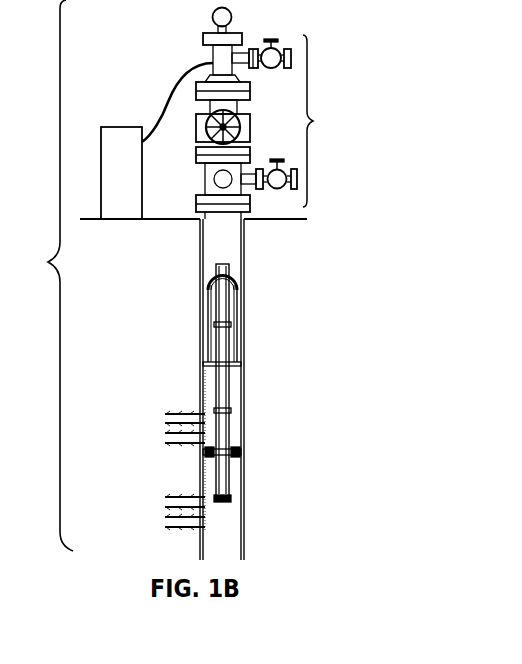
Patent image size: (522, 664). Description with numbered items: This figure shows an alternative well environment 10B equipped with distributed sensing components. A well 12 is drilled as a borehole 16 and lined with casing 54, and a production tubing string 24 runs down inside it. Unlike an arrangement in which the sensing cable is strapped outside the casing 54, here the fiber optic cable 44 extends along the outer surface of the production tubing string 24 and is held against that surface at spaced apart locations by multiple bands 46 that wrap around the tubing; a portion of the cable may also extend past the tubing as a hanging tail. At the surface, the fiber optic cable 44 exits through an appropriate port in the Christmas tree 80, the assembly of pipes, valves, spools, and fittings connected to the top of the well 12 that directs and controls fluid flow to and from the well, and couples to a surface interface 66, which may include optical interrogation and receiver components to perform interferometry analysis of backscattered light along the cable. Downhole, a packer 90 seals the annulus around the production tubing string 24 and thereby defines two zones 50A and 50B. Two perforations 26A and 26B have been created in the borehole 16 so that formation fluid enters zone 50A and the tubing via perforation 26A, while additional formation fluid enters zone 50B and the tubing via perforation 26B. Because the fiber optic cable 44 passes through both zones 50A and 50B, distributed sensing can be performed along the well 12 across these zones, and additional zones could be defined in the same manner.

The well environment 10B is at (40, 275).
The well 12 is at (181, 204).
The borehole 16 is at (199, 251).
The production tubing string 24 is at (230, 435).
The perforation 26A is at (163, 408).
The perforation 26B is at (163, 492).
The fiber optic cable 44 is at (183, 110).
The bands 46 is at (231, 326).
The zone 50A is at (207, 376).
The zone 50B is at (203, 470).
The casing 54 is at (243, 261).
The surface interface 66 is at (102, 192).
The Christmas tree 80 is at (321, 121).
The packer 90 is at (240, 461).